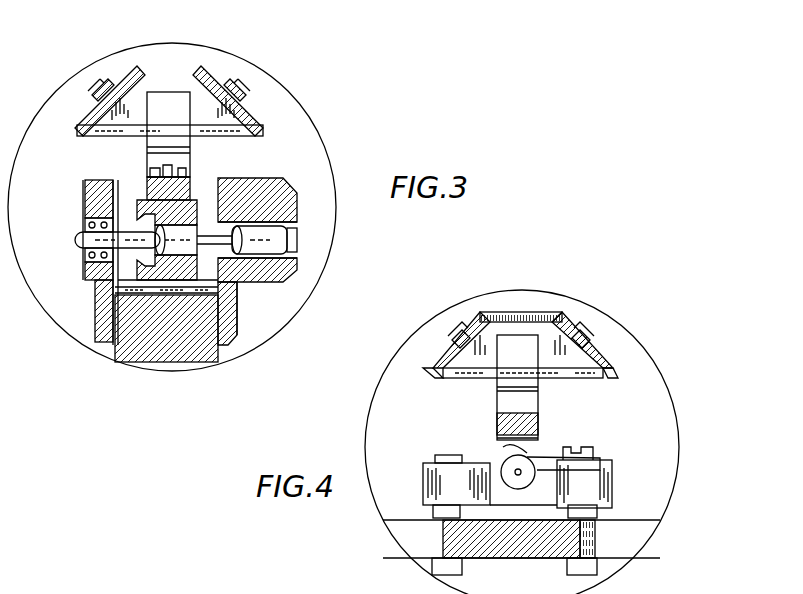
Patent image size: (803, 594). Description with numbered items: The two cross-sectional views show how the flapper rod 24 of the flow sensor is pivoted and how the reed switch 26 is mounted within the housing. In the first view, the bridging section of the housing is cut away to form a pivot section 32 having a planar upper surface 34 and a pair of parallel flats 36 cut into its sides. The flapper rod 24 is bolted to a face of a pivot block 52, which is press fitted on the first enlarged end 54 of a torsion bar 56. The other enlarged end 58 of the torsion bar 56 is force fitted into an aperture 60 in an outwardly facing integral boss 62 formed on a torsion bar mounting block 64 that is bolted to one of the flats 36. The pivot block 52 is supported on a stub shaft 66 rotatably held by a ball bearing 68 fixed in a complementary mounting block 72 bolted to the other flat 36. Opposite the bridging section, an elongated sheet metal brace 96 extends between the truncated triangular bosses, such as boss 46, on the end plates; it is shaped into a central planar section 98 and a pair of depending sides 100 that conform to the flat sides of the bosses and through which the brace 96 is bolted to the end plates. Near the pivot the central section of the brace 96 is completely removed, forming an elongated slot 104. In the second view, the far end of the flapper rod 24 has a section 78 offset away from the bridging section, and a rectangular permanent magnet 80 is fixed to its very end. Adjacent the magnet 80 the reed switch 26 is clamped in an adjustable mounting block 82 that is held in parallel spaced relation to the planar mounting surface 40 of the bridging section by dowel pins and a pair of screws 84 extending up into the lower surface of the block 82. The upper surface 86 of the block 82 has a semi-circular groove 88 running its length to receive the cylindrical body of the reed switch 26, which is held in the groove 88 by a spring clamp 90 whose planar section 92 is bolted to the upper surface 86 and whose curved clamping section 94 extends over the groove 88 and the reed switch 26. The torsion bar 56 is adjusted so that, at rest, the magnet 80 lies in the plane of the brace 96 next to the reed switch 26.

In FIG. 4, the flapper rod 24 is at (536, 425).
In FIG. 4, the reed switch 26 is at (535, 470).
In FIG. 3, the pivot section 32 is at (160, 345).
In FIG. 3, the planar upper surface 34 is at (190, 300).
In FIG. 3, the parallel flats 36 is at (103, 338).
In FIG. 4, the planar mounting surface 40 is at (528, 522).
In FIG. 3, the truncated triangular boss 46 is at (115, 118).
In FIG. 4, the truncated triangular boss 46 is at (490, 345).
In FIG. 3, the pivot block 52 is at (190, 196).
In FIG. 3, the first enlarged end 54 is at (143, 210).
In FIG. 3, the torsion bar 56 is at (205, 210).
In FIG. 3, the other enlarged end 58 is at (280, 240).
In FIG. 3, the aperture 60 is at (297, 236).
In FIG. 3, the integral boss 62 is at (297, 192).
In FIG. 3, the torsion bar mounting block 64 is at (240, 315).
In FIG. 3, the stub shaft 66 is at (85, 240).
In FIG. 3, the ball bearing 68 is at (110, 185).
In FIG. 3, the complementary mounting block 72 is at (85, 260).
In FIG. 3, the offset section 78 is at (175, 153).
In FIG. 4, the offset section 78 is at (507, 402).
In FIG. 3, the permanent magnet 80 is at (180, 119).
In FIG. 4, the permanent magnet 80 is at (520, 340).
In FIG. 4, the adjustable mounting block 82 is at (440, 483).
In FIG. 4, the screws 84 is at (435, 568).
In FIG. 4, the upper surface 86 is at (475, 460).
In FIG. 4, the semi-circular groove 88 is at (517, 491).
In FIG. 4, the spring clamp 90 is at (618, 458).
In FIG. 4, the planar section 92 is at (597, 458).
In FIG. 4, the curved clamping section 94 is at (530, 452).
In FIG. 3, the sheet metal brace 96 is at (213, 80).
In FIG. 4, the sheet metal brace 96 is at (562, 318).
In FIG. 3, the central planar section 98 is at (170, 130).
In FIG. 4, the central planar section 98 is at (540, 318).
In FIG. 3, the depending sides 100 is at (128, 80).
In FIG. 4, the depending sides 100 is at (433, 368).
In FIG. 3, the elongated slot 104 is at (143, 78).